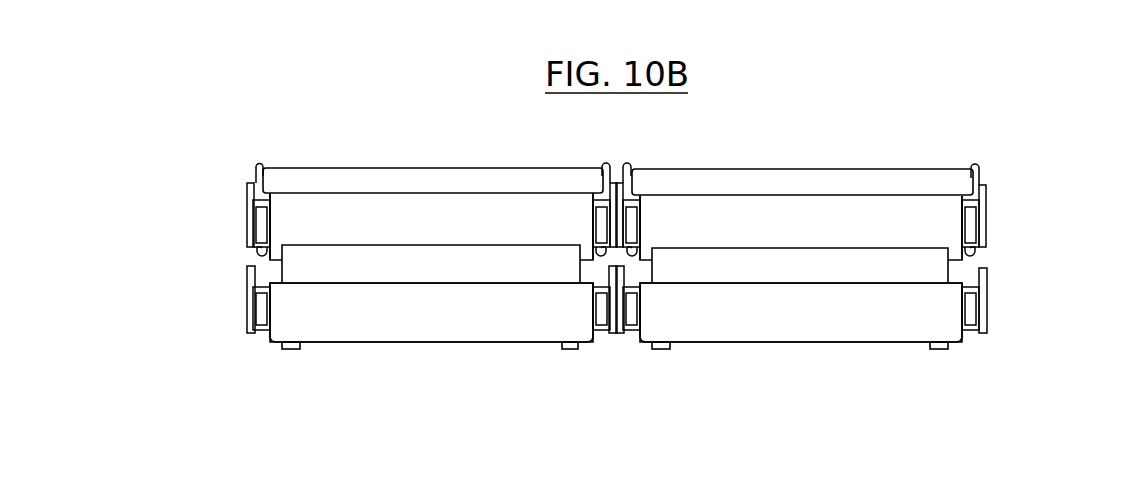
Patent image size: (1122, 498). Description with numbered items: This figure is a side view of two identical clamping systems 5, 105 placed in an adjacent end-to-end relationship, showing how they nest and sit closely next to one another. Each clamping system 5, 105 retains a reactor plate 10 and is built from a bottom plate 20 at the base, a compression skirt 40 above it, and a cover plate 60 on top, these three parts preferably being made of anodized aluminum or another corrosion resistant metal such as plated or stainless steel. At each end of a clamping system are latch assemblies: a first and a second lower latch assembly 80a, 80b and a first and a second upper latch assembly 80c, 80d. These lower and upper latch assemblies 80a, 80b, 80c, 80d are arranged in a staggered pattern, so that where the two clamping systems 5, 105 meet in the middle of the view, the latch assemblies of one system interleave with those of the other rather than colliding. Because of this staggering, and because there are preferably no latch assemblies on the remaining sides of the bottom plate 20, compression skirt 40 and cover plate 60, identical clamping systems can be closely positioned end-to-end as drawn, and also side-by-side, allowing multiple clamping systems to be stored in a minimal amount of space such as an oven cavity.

The clamping system 5 is at (473, 346).
The clamping system 105 is at (872, 348).
The reactor plate 10 is at (392, 263).
The bottom plate 20 is at (357, 342).
The compression skirt 40 is at (310, 238).
The cover plate 60 is at (326, 178).
The first lower latch assembly 80a is at (600, 330).
The second lower latch assembly 80b is at (260, 305).
The first upper latch assembly 80c is at (598, 207).
The second upper latch assembly 80d is at (262, 217).